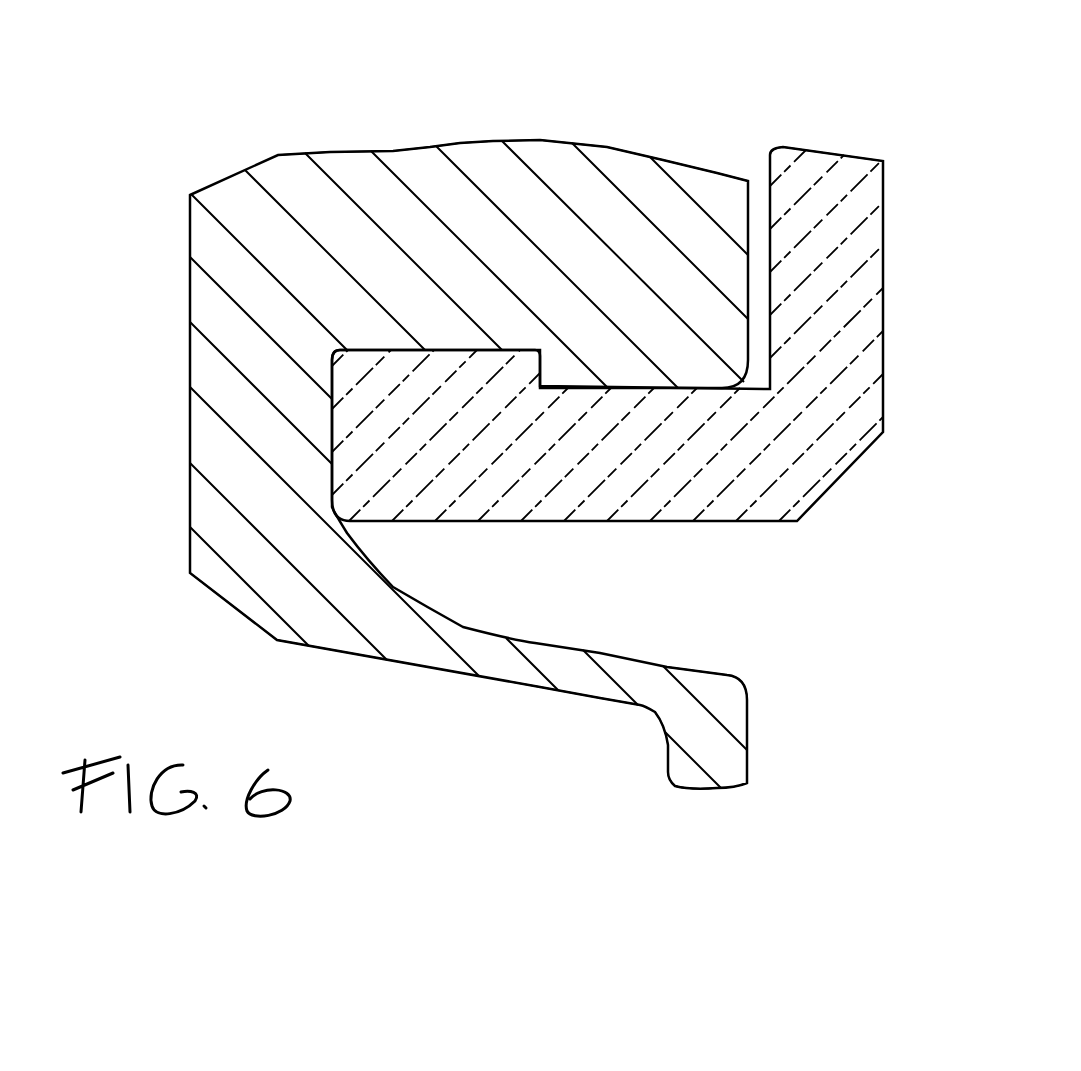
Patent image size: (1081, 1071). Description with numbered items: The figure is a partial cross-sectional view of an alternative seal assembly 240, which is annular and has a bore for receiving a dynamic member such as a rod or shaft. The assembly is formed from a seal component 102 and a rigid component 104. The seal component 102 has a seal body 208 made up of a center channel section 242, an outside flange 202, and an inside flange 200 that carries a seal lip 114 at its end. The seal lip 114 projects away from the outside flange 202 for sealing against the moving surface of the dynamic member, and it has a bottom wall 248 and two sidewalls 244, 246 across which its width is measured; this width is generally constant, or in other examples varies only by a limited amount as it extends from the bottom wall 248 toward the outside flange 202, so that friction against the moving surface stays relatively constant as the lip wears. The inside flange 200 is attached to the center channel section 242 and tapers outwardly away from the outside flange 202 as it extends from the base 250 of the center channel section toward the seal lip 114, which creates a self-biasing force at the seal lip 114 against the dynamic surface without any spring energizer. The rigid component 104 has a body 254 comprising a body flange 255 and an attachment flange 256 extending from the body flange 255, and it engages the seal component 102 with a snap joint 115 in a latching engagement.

The seal component 102 is at (300, 196).
The rigid component 104 is at (858, 340).
The outside flange 202 is at (563, 187).
The seal assembly 240 is at (762, 140).
The body flange 255 is at (853, 210).
The body 254 is at (817, 417).
The attachment flange 256 is at (620, 475).
The snap joint 115 is at (542, 362).
The seal body 208 is at (235, 328).
The center channel section 242 is at (240, 402).
The base 250 is at (275, 597).
The inside flange 200 is at (430, 650).
The seal lip 114 is at (717, 742).
The sidewall 246 is at (747, 753).
The sidewall 244 is at (663, 745).
The bottom wall 248 is at (700, 793).